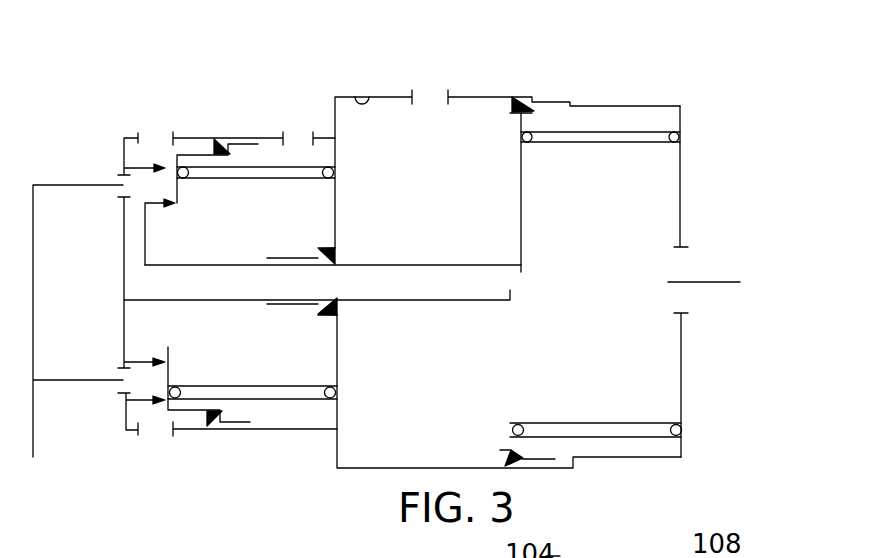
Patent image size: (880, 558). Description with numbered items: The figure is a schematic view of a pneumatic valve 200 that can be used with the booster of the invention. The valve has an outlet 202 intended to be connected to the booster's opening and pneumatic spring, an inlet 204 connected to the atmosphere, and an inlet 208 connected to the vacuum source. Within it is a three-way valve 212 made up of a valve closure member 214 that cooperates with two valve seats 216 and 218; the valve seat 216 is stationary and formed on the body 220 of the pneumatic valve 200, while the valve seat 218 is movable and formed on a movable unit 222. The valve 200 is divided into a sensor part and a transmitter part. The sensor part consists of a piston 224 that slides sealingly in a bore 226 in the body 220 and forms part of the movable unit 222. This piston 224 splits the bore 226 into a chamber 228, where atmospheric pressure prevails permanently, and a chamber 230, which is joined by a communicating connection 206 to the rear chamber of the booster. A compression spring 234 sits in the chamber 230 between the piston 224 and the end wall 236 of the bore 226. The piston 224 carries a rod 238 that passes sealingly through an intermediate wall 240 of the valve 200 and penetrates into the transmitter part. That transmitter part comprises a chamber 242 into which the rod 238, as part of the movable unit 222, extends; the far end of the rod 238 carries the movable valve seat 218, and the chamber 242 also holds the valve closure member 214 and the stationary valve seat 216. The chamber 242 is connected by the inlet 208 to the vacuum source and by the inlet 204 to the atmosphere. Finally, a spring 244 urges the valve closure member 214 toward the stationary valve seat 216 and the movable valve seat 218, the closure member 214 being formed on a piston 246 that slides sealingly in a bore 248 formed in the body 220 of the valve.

The pneumatic valve 200 is at (326, 485).
The outlet 202 is at (33, 428).
The inlet 204 is at (152, 146).
The communicating connection 206 is at (718, 282).
The inlet 208 is at (302, 137).
The three-way valve 212 is at (207, 198).
The valve closure member 214 is at (177, 203).
The valve seat 216 is at (164, 162).
The valve seat 218 is at (172, 205).
The body 220 is at (387, 93).
The movable unit 222 is at (238, 258).
The piston 224 is at (521, 170).
The bore 226 is at (353, 96).
The chamber 228 is at (495, 230).
The chamber 230 is at (588, 253).
The compression spring 234 is at (638, 131).
The end wall 236 is at (682, 192).
The rod 238 is at (388, 265).
The intermediate wall 240 is at (335, 153).
The chamber 242 is at (267, 360).
The spring 244 is at (260, 400).
The piston 246 is at (204, 146).
The bore 248 is at (282, 142).